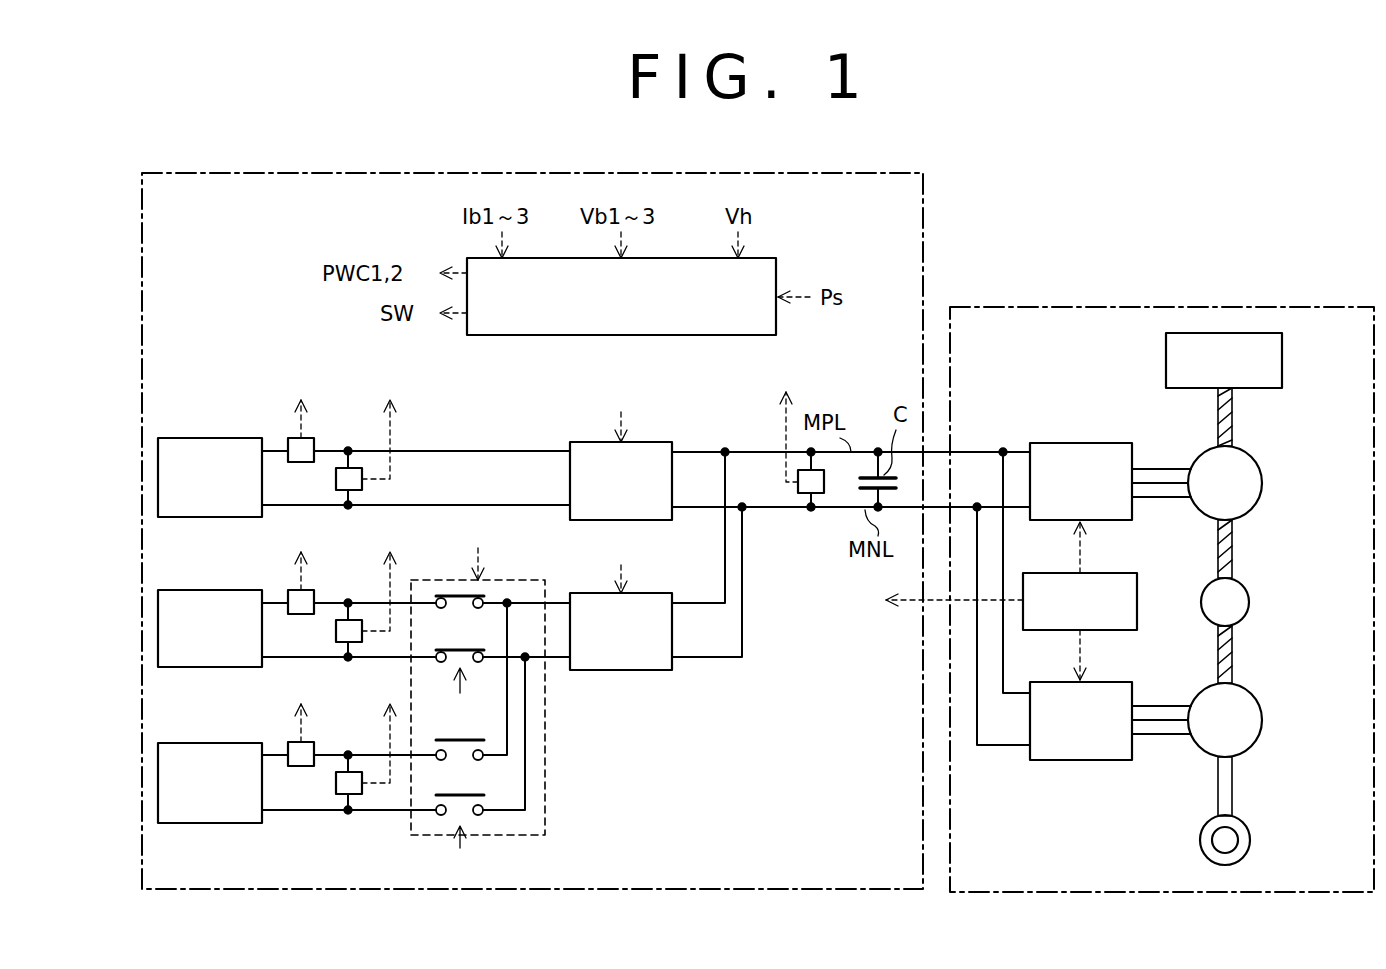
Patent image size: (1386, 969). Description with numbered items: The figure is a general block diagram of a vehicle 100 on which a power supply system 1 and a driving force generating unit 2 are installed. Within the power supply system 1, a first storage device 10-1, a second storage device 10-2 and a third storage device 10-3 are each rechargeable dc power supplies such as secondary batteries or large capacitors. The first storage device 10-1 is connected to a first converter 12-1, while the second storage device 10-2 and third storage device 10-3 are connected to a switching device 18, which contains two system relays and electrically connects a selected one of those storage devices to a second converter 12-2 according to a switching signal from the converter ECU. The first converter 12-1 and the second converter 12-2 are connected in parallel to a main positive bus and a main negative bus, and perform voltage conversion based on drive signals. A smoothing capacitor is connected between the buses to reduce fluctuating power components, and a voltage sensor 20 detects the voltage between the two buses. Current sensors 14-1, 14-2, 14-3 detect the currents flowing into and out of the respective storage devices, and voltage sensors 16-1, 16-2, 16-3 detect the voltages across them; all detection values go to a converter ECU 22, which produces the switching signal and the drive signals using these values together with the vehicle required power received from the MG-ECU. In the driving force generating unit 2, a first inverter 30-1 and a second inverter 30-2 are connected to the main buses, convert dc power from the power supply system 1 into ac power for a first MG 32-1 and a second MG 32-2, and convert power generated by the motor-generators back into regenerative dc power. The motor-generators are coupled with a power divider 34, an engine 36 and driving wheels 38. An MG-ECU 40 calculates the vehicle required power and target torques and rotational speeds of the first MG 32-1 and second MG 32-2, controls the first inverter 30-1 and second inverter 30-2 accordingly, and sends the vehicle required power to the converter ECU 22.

The vehicle 100 is at (1250, 183).
The power supply system 1 is at (777, 174).
The driving force generating unit 2 is at (1215, 308).
The first storage device 10-1 is at (158, 438).
The second storage device 10-2 is at (158, 590).
The third storage device 10-3 is at (158, 743).
The first converter 12-1 is at (660, 442).
The second converter 12-2 is at (632, 670).
The current sensor 14-1 is at (301, 462).
The current sensor 14-2 is at (301, 614).
The current sensor 14-3 is at (301, 766).
The voltage sensor 16-1 is at (348, 468).
The voltage sensor 16-2 is at (348, 620).
The voltage sensor 16-3 is at (348, 772).
The switching device 18 is at (545, 780).
The voltage sensor 20 is at (824, 490).
The converter ECU 22 is at (655, 335).
The first inverter 30-1 is at (1110, 443).
The second inverter 30-2 is at (1110, 682).
The first MG 32-1 is at (1252, 458).
The second MG 32-2 is at (1252, 695).
The power divider 34 is at (1245, 584).
The engine 36 is at (1166, 366).
The driving wheels 38 is at (1200, 840).
The MG-ECU 40 is at (1120, 573).